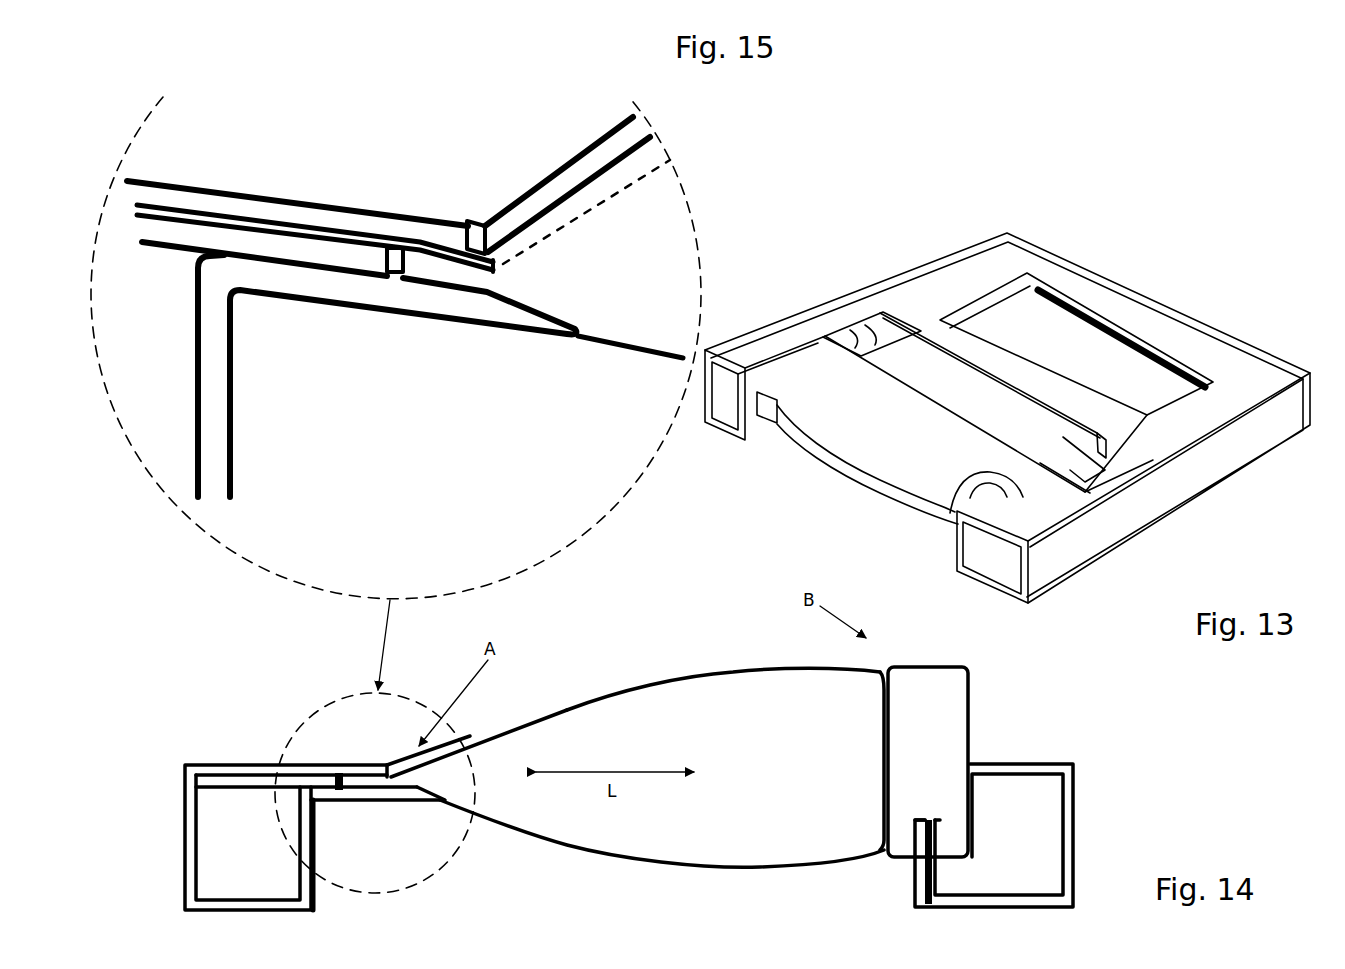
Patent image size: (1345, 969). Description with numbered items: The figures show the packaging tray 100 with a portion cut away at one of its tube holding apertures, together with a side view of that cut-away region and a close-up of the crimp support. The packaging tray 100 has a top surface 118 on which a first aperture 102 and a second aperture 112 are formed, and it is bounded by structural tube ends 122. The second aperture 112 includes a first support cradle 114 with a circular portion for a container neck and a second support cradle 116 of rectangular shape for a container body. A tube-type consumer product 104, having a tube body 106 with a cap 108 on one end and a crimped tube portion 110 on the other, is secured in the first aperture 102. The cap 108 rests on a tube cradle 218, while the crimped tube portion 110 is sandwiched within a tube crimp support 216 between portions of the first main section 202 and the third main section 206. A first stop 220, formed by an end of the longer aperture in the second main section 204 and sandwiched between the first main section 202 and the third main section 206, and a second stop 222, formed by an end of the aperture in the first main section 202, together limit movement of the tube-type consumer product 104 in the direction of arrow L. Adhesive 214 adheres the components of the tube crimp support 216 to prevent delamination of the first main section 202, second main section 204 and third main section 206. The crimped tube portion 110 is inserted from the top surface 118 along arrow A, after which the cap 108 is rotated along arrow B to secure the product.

In FIG. 13, the packaging tray 100 is at (947, 236).
In FIG. 13, the first aperture 102 is at (975, 382).
In FIG. 14, the first aperture 102 is at (205, 755).
In FIG. 13, the tube-type consumer product 104 is at (840, 412).
In FIG. 13, the tube body 106 is at (863, 447).
In FIG. 14, the tube body 106 is at (670, 690).
In FIG. 13, the cap 108 is at (960, 497).
In FIG. 14, the cap 108 is at (913, 660).
In FIG. 13, the crimped tube portion 110 is at (767, 430).
In FIG. 14, the crimped tube portion 110 is at (403, 765).
In FIG. 15, the crimped tube portion 110 is at (467, 220).
In FIG. 13, the second aperture 112 is at (989, 403).
In FIG. 13, the first support cradle 114 is at (877, 313).
In FIG. 13, the second support cradle 116 is at (1165, 462).
In FIG. 13, the top surface 118 is at (1012, 229).
In FIG. 14, the top surface 118 is at (1027, 763).
In FIG. 13, the structural tube end 122 is at (717, 428).
In FIG. 14, the structural tube end 122 is at (318, 915).
In FIG. 15, the first main section 202 is at (215, 183).
In FIG. 14, the second main section 204 is at (223, 787).
In FIG. 15, the second main section 204 is at (242, 246).
In FIG. 14, the third main section 206 is at (360, 803).
In FIG. 15, the third main section 206 is at (327, 310).
In FIG. 15, the adhesive 214 is at (363, 260).
In FIG. 13, the tube crimp support 216 is at (1043, 276).
In FIG. 14, the tube crimp support 216 is at (314, 739).
In FIG. 15, the tube crimp support 216 is at (345, 181).
In FIG. 13, the tube cradle 218 is at (1170, 387).
In FIG. 14, the tube cradle 218 is at (923, 813).
In FIG. 14, the first stop 220 is at (340, 778).
In FIG. 15, the first stop 220 is at (403, 277).
In FIG. 14, the second stop 222 is at (940, 815).